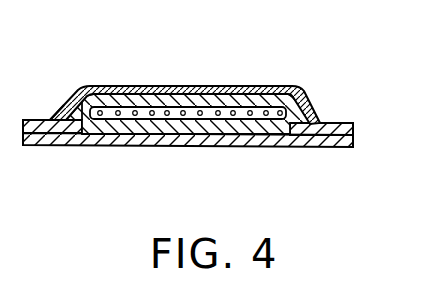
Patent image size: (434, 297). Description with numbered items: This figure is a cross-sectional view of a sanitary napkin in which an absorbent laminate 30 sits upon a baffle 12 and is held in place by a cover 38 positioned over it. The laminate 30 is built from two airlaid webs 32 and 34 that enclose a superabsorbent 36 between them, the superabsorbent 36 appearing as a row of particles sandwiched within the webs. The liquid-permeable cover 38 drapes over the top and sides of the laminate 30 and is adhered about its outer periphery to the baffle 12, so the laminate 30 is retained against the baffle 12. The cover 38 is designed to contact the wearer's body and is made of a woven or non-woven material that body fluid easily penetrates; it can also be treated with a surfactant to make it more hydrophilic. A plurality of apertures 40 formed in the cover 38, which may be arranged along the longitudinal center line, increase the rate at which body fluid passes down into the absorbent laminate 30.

The baffle 12 is at (342, 148).
The laminate 30 is at (322, 88).
The airlaid web 32 is at (250, 100).
The airlaid web 34 is at (259, 119).
The superabsorbent 36 is at (109, 117).
The liquid-permeable cover 38 is at (50, 123).
The apertures 40 is at (182, 91).